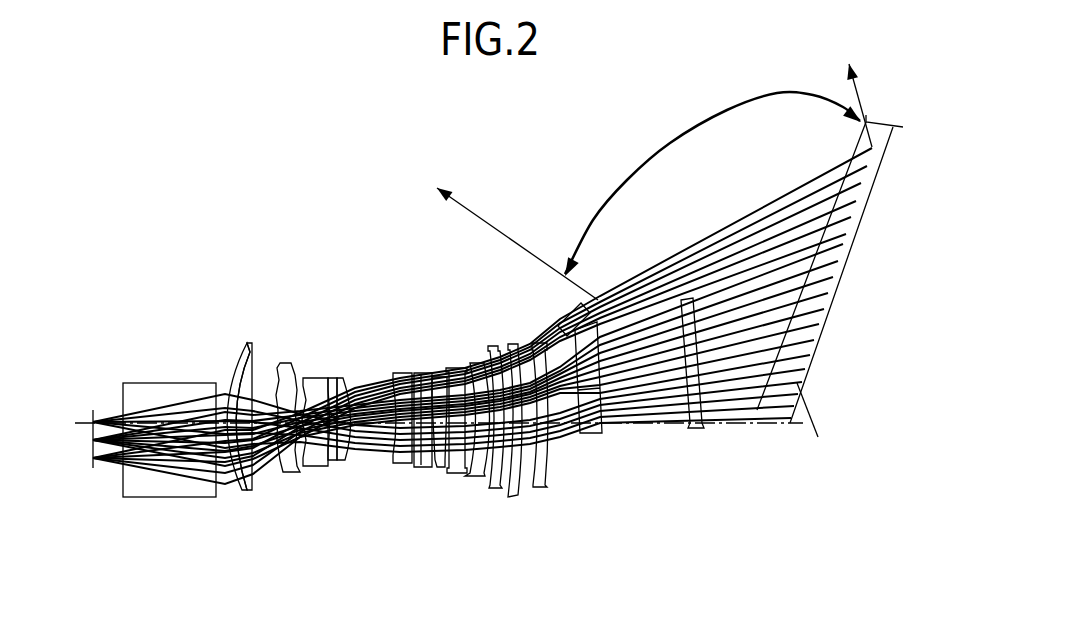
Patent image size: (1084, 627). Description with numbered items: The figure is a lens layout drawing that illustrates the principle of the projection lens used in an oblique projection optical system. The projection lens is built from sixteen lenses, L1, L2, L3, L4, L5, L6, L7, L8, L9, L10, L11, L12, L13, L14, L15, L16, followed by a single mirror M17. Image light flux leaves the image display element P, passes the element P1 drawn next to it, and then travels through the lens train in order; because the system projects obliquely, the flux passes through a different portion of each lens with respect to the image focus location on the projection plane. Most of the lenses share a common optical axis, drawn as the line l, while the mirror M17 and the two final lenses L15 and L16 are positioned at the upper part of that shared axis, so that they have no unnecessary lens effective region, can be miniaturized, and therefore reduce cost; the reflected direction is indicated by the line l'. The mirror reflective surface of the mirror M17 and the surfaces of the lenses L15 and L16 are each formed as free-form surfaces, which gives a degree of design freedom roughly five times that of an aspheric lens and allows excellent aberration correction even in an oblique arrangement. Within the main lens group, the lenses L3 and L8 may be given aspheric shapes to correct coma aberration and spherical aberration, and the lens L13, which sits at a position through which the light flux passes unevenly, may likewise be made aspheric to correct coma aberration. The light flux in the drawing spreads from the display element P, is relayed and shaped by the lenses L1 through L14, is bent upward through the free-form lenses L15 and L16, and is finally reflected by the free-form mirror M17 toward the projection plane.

The optical axis l is at (434, 407).
The reflected optical axis l' is at (828, 407).
The image display element P is at (90, 478).
The prism P1 is at (165, 485).
The lens L1 is at (236, 492).
The lens L2 is at (252, 362).
The lens L3 is at (282, 468).
The lens L4 is at (313, 382).
The lens L5 is at (328, 460).
The lens L6 is at (348, 382).
The lens L7 is at (400, 463).
The lens L8 is at (422, 372).
The lens L9 is at (433, 375).
The lens L10 is at (457, 367).
The lens L11 is at (466, 472).
The lens L12 is at (489, 488).
The lens L13 is at (510, 497).
The lens L14 is at (547, 430).
The free-form surface lens L15 is at (599, 432).
The free-form surface lens L16 is at (703, 430).
The free-form surface mirror M17 is at (830, 294).